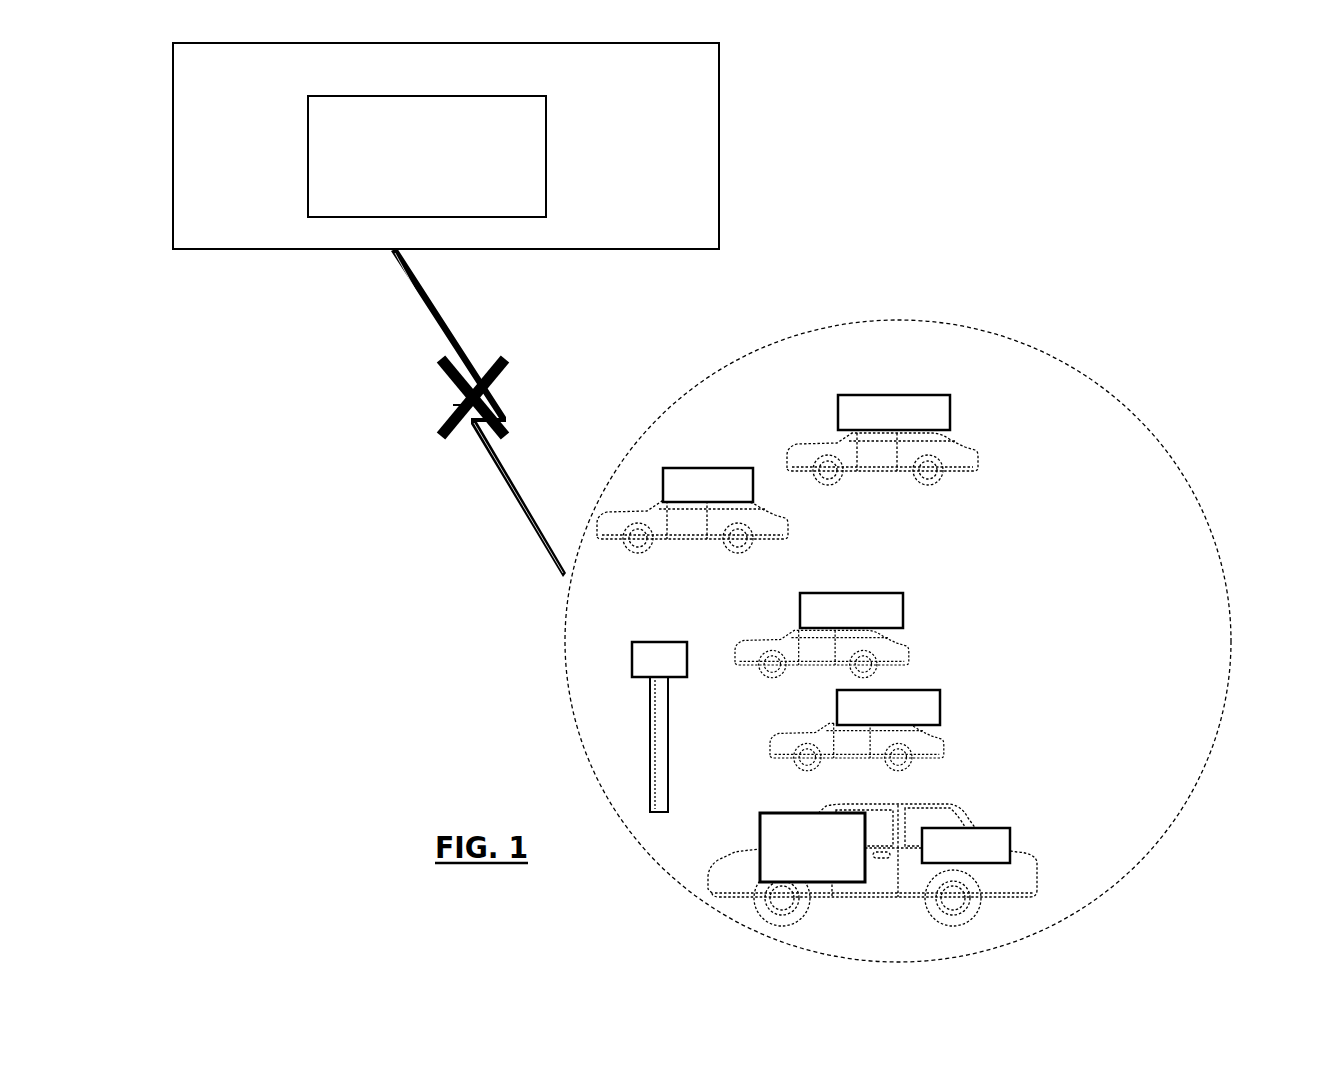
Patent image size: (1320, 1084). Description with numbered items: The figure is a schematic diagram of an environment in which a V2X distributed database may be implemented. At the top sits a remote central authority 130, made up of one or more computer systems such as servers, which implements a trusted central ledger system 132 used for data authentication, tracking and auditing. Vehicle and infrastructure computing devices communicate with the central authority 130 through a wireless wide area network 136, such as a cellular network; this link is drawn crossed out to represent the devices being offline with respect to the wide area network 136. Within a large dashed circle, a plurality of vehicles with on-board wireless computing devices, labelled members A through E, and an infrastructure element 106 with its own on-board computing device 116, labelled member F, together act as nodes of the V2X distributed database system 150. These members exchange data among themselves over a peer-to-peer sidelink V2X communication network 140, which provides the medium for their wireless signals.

The central authority 130 is at (553, 73).
The central ledger system 132 is at (445, 179).
The wireless wide area network 136 is at (490, 458).
The peer-to-peer sidelink V2X communication network 140 is at (840, 365).
The V2X distributed database system 150 is at (1132, 672).
The on-board processor-enabled computing device 116 is at (678, 671).
The infrastructure element 106 is at (668, 710).